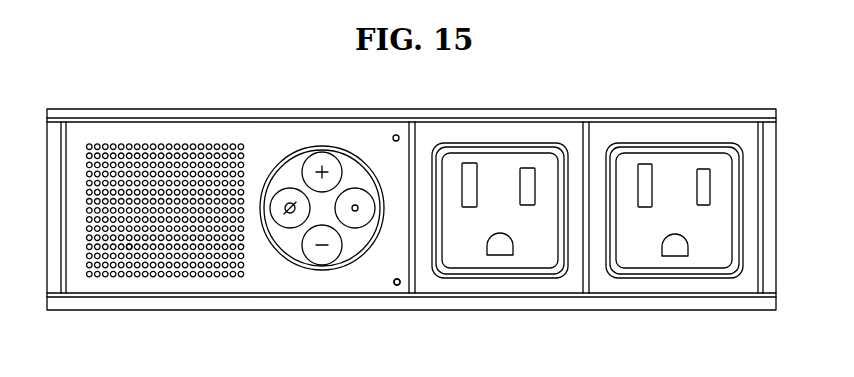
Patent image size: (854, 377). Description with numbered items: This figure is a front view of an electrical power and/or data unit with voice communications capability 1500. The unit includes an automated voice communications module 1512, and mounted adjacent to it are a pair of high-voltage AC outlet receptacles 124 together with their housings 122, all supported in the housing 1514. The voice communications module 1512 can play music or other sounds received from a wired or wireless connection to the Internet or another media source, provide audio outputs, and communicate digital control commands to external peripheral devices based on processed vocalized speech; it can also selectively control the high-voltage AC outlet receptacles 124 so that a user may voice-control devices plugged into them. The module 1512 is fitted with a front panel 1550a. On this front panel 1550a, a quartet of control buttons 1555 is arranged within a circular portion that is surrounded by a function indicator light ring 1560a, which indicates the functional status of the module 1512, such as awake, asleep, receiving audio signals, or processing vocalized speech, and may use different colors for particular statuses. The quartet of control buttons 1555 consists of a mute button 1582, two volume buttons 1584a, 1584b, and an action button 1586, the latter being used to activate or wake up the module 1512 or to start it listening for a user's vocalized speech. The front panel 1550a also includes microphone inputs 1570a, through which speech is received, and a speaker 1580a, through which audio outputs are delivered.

The electrical power and/or data unit with voice communications capability 1500 is at (260, 51).
The housing 1514 is at (56, 108).
The automated voice communications module 1512 is at (262, 143).
The front panel 1550a is at (102, 138).
The speaker 1580a is at (126, 240).
The quartet of control buttons 1555 is at (360, 145).
The function indicator light ring 1560a is at (262, 190).
The volume button 1584a is at (305, 165).
The volume button 1584b is at (322, 266).
The mute button 1582 is at (278, 213).
The action button 1586 is at (370, 207).
The microphone inputs 1570a is at (398, 287).
The high-voltage AC outlet receptacle 124 is at (505, 177).
The housing 122 is at (565, 138).